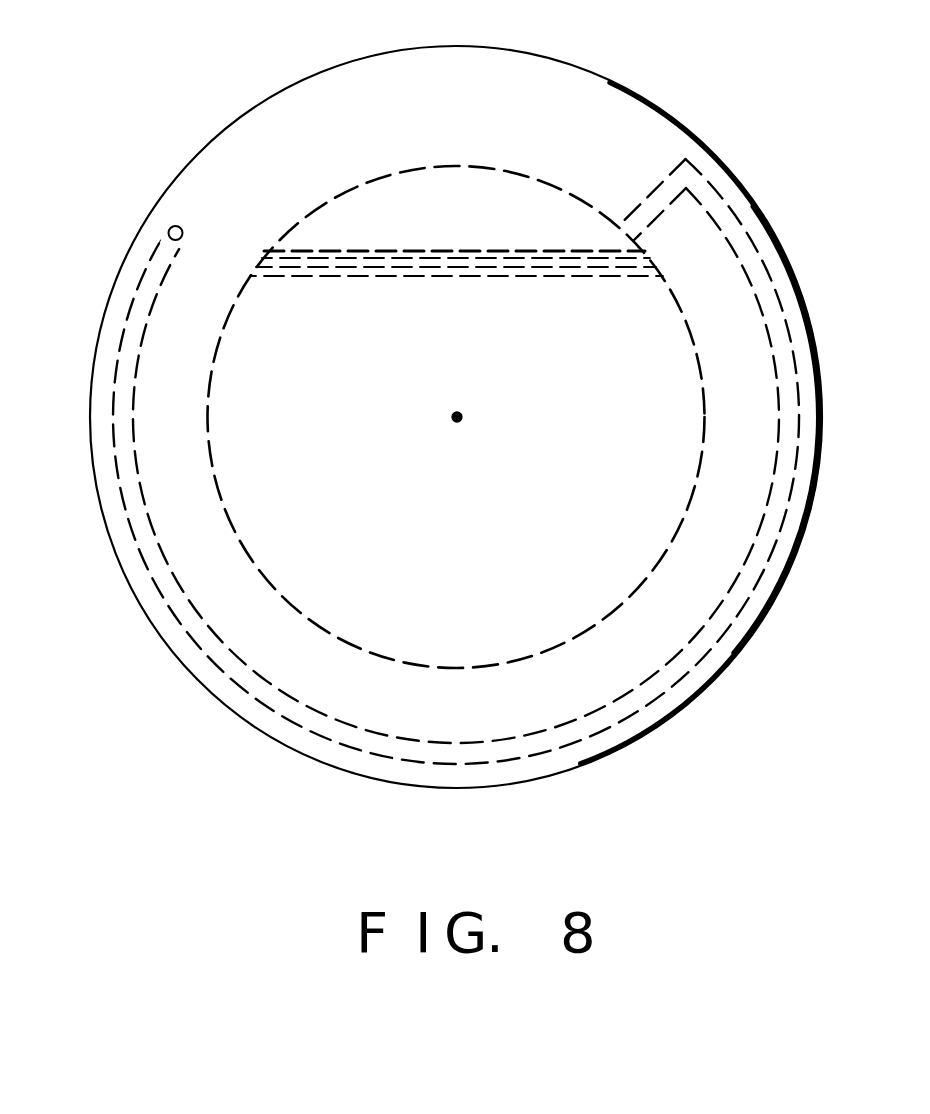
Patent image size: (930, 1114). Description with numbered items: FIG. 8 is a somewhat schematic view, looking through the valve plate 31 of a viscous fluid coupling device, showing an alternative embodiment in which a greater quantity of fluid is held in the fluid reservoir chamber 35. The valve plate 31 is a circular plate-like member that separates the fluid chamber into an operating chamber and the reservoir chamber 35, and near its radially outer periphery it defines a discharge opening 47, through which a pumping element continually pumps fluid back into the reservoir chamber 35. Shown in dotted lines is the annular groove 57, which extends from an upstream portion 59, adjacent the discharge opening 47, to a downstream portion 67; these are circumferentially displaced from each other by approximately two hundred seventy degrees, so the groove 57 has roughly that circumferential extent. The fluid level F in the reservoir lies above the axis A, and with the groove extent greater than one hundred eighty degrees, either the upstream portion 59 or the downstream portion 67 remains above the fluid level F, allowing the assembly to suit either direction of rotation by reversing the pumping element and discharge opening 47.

The valve plate 31 is at (338, 68).
The fluid reservoir chamber 35 is at (573, 594).
The discharge opening 47 is at (170, 227).
The annular groove 57 is at (190, 617).
The upstream portion 59 is at (97, 217).
The downstream portion 67 is at (658, 202).
The fluid level F is at (489, 248).
The axis A is at (457, 417).